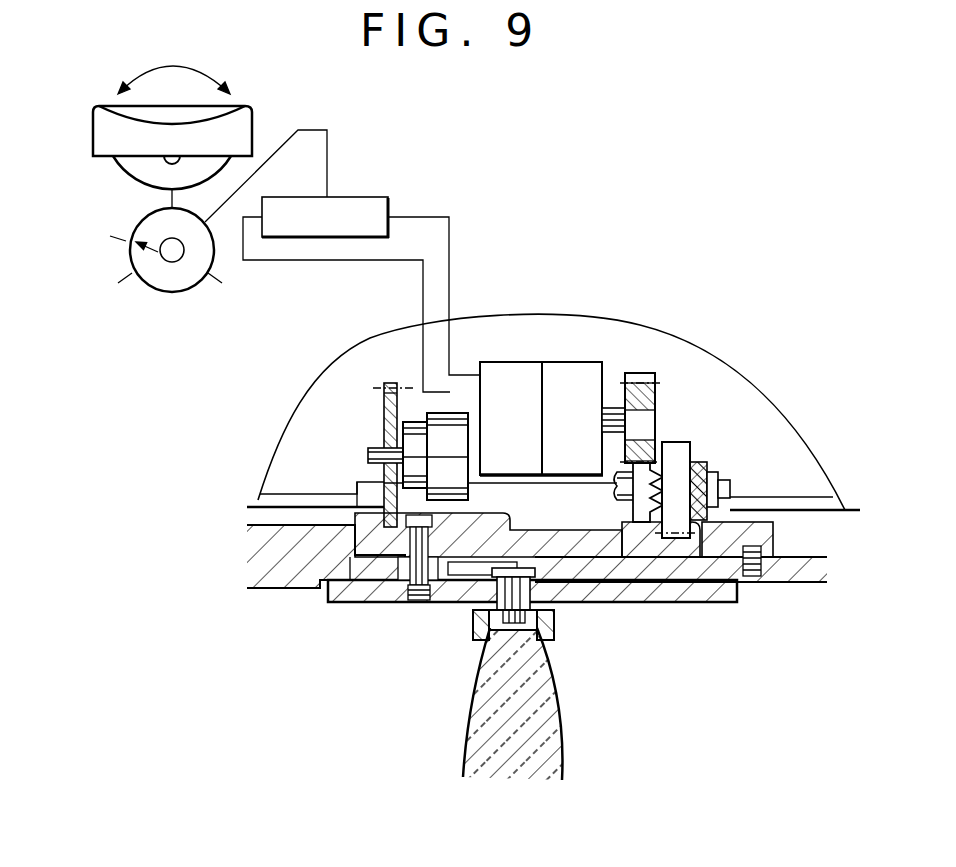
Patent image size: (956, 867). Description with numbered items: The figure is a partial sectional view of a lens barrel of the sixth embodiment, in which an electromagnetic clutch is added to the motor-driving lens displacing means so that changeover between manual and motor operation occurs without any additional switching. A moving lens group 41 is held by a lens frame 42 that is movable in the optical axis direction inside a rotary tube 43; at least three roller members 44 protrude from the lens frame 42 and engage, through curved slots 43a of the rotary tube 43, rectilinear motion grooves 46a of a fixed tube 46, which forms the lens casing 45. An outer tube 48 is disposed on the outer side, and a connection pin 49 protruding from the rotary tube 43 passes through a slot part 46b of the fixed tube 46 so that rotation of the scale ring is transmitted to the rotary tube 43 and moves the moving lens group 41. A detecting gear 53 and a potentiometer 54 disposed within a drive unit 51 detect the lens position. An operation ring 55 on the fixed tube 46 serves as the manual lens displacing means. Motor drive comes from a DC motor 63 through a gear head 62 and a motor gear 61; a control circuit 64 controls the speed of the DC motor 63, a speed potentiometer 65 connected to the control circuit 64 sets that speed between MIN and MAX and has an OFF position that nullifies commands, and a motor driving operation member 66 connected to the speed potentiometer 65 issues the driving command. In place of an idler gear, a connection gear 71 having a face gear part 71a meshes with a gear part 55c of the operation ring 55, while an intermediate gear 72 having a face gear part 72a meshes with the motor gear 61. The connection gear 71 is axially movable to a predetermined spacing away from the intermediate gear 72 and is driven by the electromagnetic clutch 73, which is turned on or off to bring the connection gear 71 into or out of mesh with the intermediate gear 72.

The moving lens group 41 is at (513, 757).
The lens frame 42 is at (490, 596).
The rotary tube 43 is at (333, 595).
The curved slots 43a is at (548, 590).
The roller members 44 is at (470, 590).
The lens casing 45 is at (258, 519).
The fixed tube 46 is at (278, 582).
The rectilinear motion grooves 46a is at (440, 582).
The slot part 46b is at (393, 567).
The outer tube 48 is at (730, 535).
The connection pin 49 is at (405, 568).
The drive unit 51 is at (254, 492).
The detecting gear 53 is at (383, 397).
The potentiometer 54 is at (450, 425).
The operation ring 55 is at (370, 538).
The gear part 55c is at (690, 545).
The motor gear 61 is at (637, 370).
The gear head 62 is at (572, 375).
The DC motor 63 is at (513, 380).
The control circuit 64 is at (350, 203).
The speed potentiometer 65 is at (160, 282).
The motor driving operation member 66 is at (240, 125).
The connection gear 71 is at (697, 462).
The face gear part 71a is at (677, 457).
The intermediate gear 72 is at (620, 490).
The face gear part 72a is at (655, 525).
The electromagnetic clutch 73 is at (718, 478).